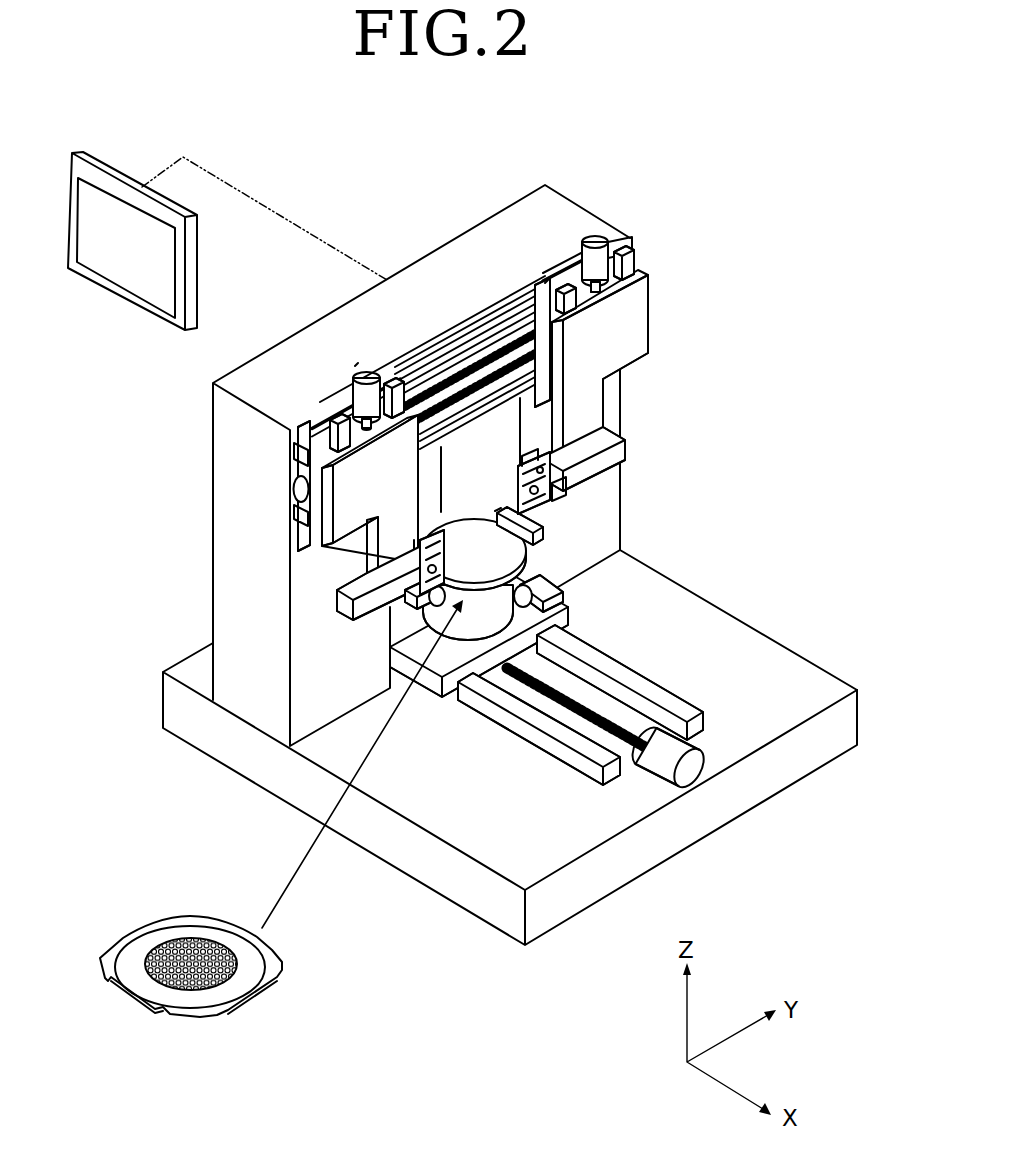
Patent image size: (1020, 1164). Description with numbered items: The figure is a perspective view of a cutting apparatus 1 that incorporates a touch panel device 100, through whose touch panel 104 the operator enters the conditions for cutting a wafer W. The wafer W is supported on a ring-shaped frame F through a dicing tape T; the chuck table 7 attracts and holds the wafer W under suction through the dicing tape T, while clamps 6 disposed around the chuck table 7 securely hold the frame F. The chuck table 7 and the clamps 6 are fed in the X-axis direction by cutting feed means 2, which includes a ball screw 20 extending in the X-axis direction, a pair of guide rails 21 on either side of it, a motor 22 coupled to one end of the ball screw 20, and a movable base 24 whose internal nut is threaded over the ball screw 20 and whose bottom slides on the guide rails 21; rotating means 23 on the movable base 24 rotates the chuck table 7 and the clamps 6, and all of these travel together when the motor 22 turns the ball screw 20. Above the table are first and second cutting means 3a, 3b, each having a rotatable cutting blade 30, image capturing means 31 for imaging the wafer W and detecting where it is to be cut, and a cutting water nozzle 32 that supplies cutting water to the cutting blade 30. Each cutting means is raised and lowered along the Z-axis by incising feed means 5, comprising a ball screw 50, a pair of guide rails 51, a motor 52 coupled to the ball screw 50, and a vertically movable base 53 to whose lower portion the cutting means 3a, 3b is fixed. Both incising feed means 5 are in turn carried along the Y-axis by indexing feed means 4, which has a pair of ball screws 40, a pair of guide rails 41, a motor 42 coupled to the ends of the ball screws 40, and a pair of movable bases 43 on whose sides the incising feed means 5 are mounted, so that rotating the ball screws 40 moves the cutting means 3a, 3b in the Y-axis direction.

The cutting apparatus 1 is at (360, 190).
The cutting feed means 2 is at (656, 789).
The first cutting means 3a is at (621, 448).
The second cutting means 3b is at (371, 612).
The indexing feed means 4 is at (430, 340).
The incising feed means 5 is at (350, 360).
The clamps 6 is at (553, 522).
The chuck table 7 is at (540, 556).
The ball screw 20 is at (626, 710).
The guide rails 21 is at (622, 673).
The motor 22 is at (694, 760).
The rotating means 23 is at (471, 622).
The movable base 24 is at (448, 688).
The cutting blade 30 is at (528, 480).
The image capturing means 31 is at (420, 566).
The cutting water nozzle 32 is at (508, 509).
The ball screws 40 is at (456, 368).
The guide rails 41 is at (497, 327).
The motor 42 is at (296, 492).
The movable bases 43 is at (317, 417).
The ball screw 50 is at (298, 441).
The guide rails 51 is at (337, 413).
The motor 52 is at (368, 376).
The vertically movable base 53 is at (312, 535).
The touch panel device 100 is at (112, 165).
The touch panel 104 is at (126, 270).
The wafer W is at (187, 930).
The dicing tape T is at (229, 940).
The frame F is at (259, 989).